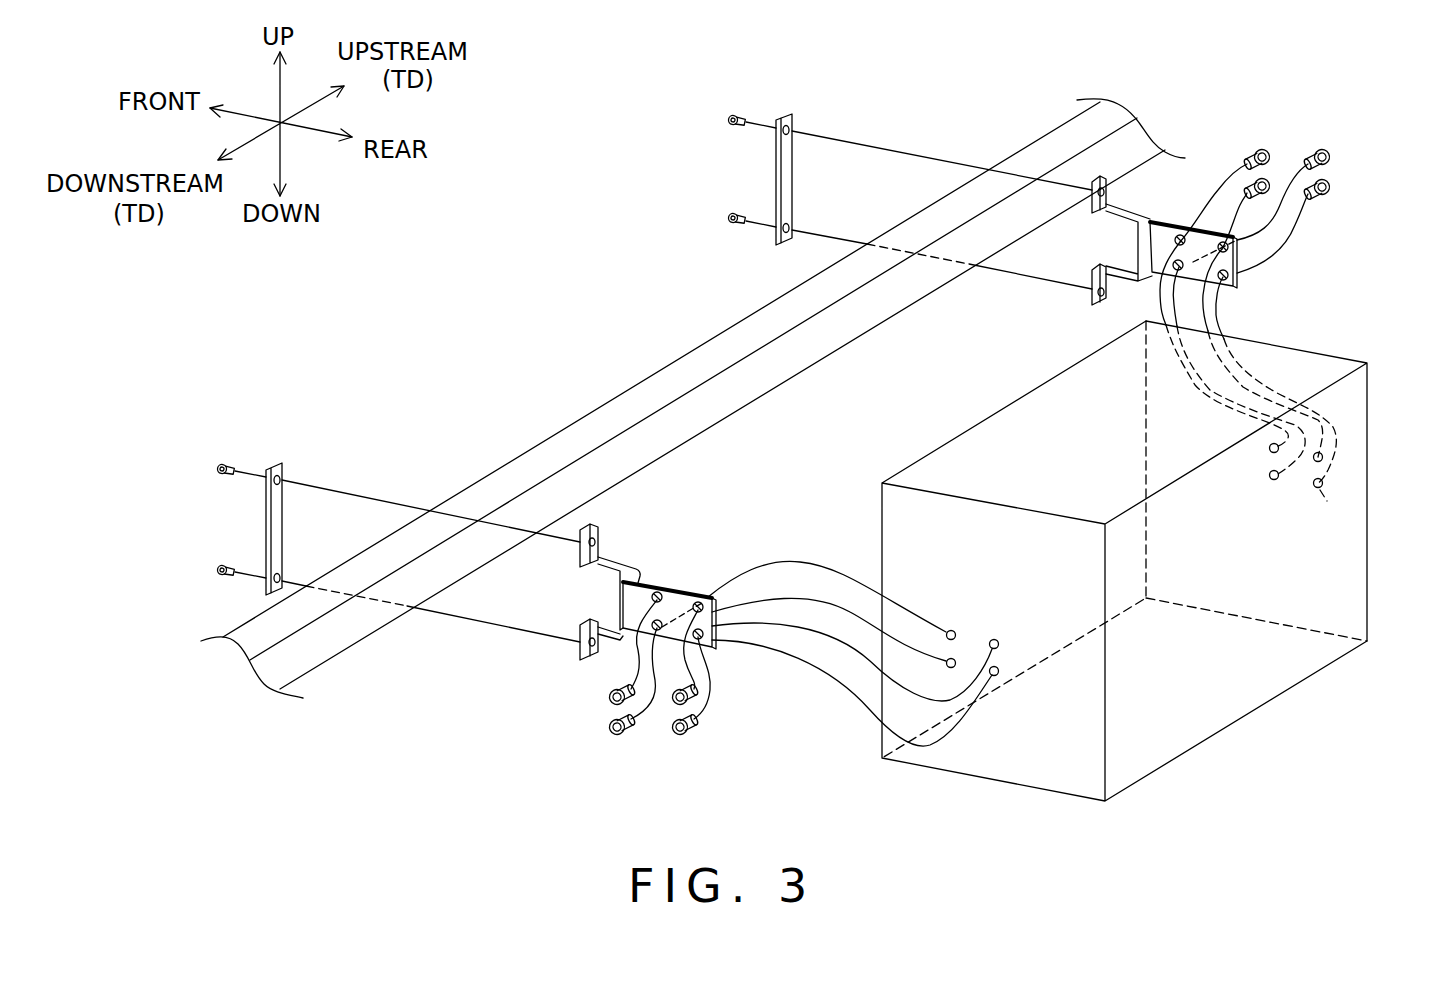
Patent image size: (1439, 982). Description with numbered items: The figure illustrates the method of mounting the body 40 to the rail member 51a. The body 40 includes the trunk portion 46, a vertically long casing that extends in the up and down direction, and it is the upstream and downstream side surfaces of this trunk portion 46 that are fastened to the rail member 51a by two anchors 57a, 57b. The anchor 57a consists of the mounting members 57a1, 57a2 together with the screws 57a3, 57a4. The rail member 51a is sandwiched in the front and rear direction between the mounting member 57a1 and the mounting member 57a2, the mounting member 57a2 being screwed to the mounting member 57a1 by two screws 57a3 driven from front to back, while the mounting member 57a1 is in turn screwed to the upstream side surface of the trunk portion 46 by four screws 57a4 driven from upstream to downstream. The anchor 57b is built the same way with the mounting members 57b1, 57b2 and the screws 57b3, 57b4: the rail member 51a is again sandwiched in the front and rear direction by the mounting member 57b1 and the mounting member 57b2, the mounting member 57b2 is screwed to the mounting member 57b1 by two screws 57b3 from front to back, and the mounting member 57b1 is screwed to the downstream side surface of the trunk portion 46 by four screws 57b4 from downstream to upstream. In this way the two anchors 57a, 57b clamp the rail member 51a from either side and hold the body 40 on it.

The rail member 51a is at (653, 375).
The anchor 57a is at (991, 274).
The mounting member 57a1 is at (1237, 283).
The mounting member 57a2 is at (795, 117).
The screws 57a3 is at (713, 110).
The screws 57a4 is at (1350, 140).
The anchor 57b is at (560, 581).
The mounting member 57b1 is at (575, 653).
The mounting member 57b2 is at (283, 463).
The screws 57b3 is at (212, 462).
The screws 57b4 is at (708, 743).
The trunk portion 46 is at (1298, 686).
The body 40 is at (1272, 734).